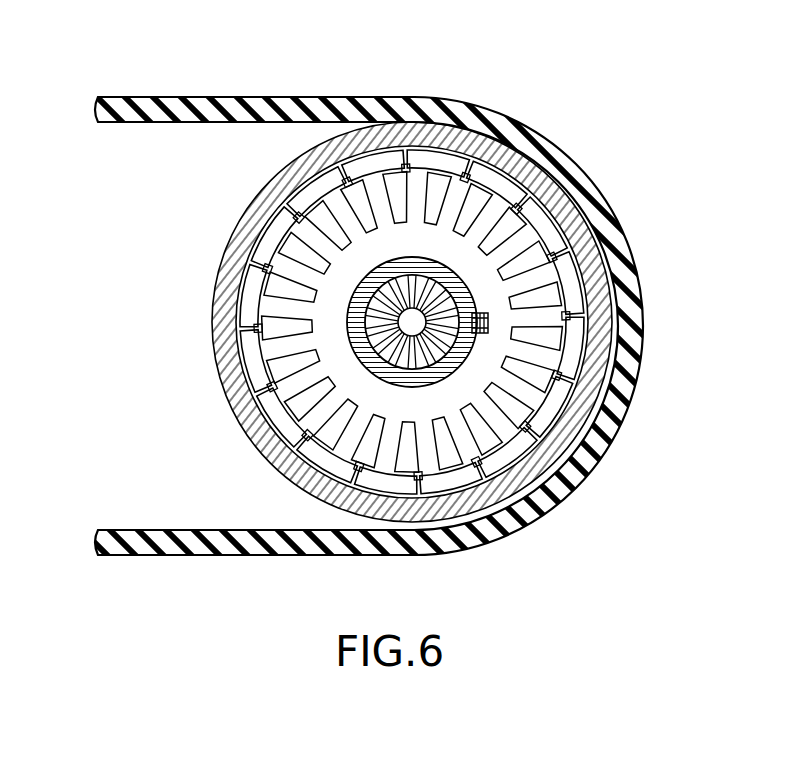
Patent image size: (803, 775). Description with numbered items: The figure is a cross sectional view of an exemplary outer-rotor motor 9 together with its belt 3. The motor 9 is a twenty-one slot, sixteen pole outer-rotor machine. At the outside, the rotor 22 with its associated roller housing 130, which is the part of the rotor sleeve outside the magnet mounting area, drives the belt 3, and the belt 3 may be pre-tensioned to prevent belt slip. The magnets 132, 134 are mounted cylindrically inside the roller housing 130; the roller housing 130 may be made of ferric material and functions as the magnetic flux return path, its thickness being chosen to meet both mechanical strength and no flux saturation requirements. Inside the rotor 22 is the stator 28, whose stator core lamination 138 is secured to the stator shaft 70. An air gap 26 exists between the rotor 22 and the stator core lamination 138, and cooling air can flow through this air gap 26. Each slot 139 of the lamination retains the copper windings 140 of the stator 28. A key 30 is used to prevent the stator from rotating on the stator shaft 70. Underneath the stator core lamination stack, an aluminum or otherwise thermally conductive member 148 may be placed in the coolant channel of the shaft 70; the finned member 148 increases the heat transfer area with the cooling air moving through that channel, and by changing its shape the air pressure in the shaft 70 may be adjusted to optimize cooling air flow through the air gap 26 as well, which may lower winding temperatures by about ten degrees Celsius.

The belt 3 is at (385, 314).
The outer-rotor motor 9 is at (378, 284).
The rotor 22 is at (438, 277).
The air gap 26 is at (527, 135).
The stator 28 is at (465, 395).
The key 30 is at (488, 323).
The stator shaft 70 is at (317, 352).
The roller housing 130 is at (297, 162).
The magnet 132 is at (375, 158).
The magnet 134 is at (437, 155).
The stator core lamination 138 is at (507, 203).
The slot 139 is at (565, 345).
The copper windings 140 is at (537, 262).
The thermally conductive member 148 is at (410, 327).